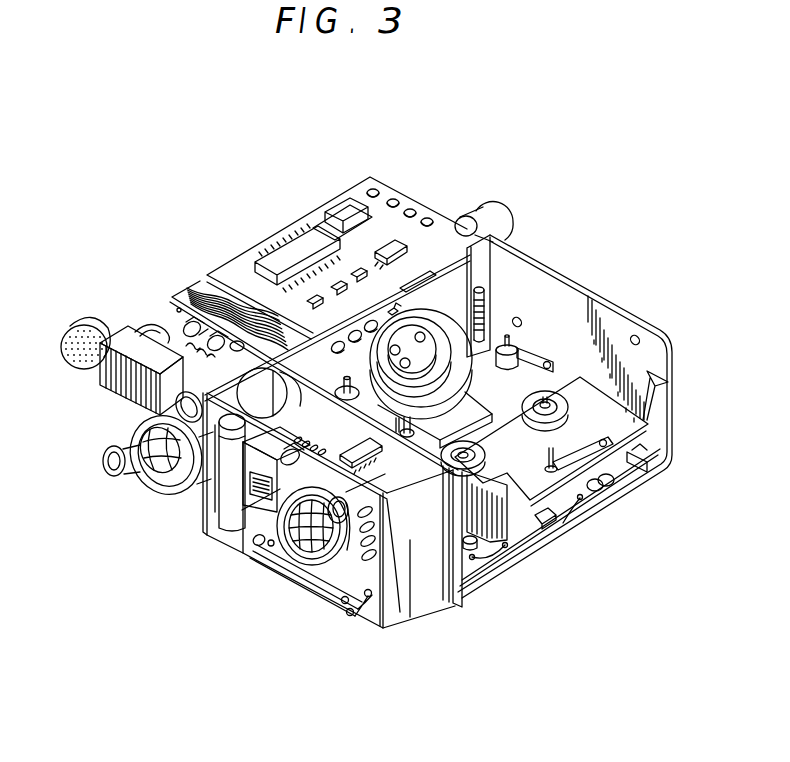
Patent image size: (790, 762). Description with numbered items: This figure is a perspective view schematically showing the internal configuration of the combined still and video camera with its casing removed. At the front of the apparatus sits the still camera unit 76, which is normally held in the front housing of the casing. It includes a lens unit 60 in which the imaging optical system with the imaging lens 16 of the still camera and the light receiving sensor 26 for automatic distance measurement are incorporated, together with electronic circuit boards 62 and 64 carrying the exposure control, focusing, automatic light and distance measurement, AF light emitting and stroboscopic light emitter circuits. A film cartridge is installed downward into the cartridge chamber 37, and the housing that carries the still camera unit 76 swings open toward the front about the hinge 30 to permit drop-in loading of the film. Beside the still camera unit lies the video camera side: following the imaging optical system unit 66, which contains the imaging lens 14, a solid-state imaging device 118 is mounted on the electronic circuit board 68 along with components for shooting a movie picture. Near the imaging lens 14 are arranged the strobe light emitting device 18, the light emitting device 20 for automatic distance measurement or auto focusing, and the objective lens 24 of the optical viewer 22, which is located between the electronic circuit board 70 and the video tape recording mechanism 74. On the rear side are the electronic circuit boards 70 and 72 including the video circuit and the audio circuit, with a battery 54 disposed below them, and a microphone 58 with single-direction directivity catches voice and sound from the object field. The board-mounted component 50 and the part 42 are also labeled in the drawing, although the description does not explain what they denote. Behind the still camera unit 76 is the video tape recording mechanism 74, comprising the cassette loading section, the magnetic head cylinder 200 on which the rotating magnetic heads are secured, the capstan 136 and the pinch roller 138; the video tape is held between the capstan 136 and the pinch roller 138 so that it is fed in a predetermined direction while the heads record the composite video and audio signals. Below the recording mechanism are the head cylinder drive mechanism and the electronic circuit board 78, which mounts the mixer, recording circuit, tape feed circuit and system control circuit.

The microphone 58 is at (80, 322).
The solid-state imaging device 118 is at (167, 337).
The strobe light emitting device 18 is at (110, 387).
The electronic circuit board 68 is at (178, 300).
The electronic circuit board 70 is at (247, 250).
The integrated circuit 50 is at (340, 208).
The electronic circuit board 72 is at (450, 228).
The battery 54 is at (462, 247).
The optical viewer 22 is at (472, 216).
The thumbwheel 42 is at (512, 220).
The head cylinder 200 is at (467, 287).
The video tape recording mechanism 74 is at (548, 315).
The capstan 136 is at (483, 307).
The pinch roller 138 is at (515, 350).
The cartridge chamber 37 is at (282, 402).
The electronic circuit board 64 is at (398, 488).
The hinge 30 is at (470, 447).
The electronic circuit board 78 is at (613, 497).
The lens unit 60 is at (241, 532).
The still camera unit 76 is at (256, 568).
The imaging lens 16 is at (296, 556).
The light receiving sensor 26 is at (336, 524).
The electronic circuit board 62 is at (373, 623).
The imaging lens 14 is at (150, 492).
The imaging optical system unit 66 is at (173, 497).
The light emitting device 20 is at (110, 477).
The objective lens 24 is at (143, 413).